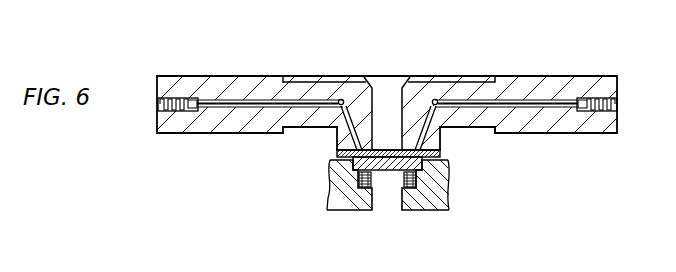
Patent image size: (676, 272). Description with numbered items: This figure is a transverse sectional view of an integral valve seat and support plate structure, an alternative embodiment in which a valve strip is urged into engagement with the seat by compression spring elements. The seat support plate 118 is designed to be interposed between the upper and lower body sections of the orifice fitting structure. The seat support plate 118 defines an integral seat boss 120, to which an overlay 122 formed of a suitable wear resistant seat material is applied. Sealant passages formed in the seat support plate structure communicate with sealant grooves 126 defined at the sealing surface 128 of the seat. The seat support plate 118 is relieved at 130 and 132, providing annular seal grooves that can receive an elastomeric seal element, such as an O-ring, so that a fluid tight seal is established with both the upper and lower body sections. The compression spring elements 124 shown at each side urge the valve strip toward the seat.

The seat support plate 118 is at (227, 87).
The relief (annular seal groove) 130 is at (303, 75).
The wire with springs 124 is at (523, 103).
The relief (annular seal groove) 132 is at (494, 131).
The integral seat boss 120 is at (337, 148).
The overlay 122 is at (440, 153).
The sealing surface 128 is at (335, 176).
The sealant grooves 126 is at (380, 171).